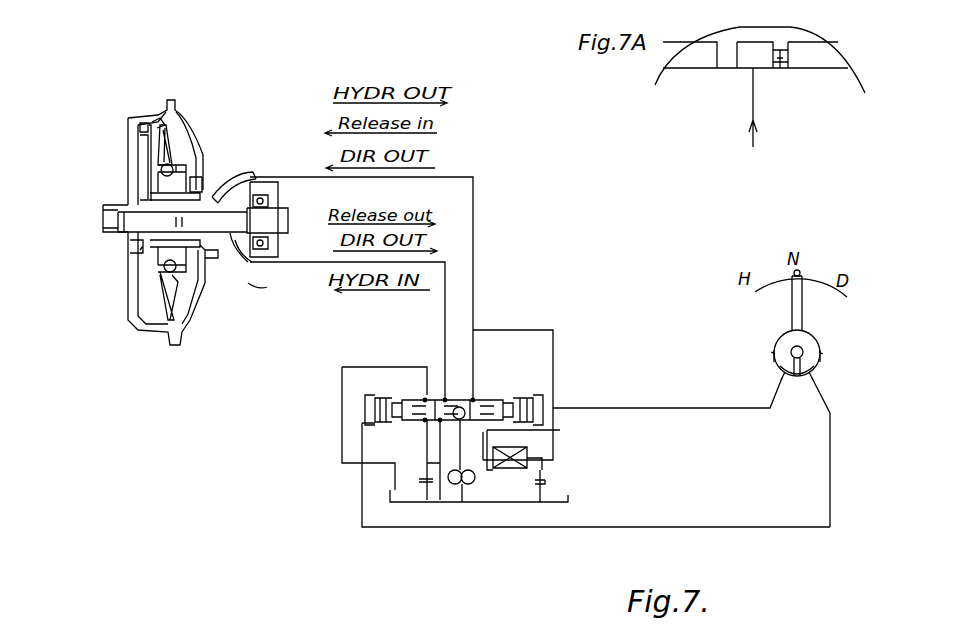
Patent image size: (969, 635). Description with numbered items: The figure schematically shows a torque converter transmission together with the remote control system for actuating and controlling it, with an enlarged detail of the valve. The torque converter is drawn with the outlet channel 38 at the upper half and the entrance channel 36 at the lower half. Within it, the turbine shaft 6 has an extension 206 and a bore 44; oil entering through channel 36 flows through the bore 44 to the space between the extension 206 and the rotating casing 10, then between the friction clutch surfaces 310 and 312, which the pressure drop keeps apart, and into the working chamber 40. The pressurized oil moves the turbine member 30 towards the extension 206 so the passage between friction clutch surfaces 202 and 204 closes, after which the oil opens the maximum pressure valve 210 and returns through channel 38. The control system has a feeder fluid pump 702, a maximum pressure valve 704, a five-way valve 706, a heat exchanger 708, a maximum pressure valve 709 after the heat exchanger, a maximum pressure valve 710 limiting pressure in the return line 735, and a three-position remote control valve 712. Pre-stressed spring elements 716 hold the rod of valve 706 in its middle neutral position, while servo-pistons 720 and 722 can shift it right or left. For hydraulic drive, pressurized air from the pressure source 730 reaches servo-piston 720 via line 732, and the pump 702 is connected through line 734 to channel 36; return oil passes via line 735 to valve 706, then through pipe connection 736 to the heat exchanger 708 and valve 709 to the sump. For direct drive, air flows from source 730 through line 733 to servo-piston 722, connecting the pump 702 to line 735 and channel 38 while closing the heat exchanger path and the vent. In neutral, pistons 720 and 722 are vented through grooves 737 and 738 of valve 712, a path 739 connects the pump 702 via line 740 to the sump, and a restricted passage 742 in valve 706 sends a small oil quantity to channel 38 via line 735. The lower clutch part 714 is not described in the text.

In FIG. 7, the turbine shaft 6 is at (278, 231).
In FIG. 7, the rotating casing 10 is at (135, 158).
In FIG. 7, the turbine member 30 is at (158, 152).
In FIG. 7, the channel 36 is at (259, 253).
In FIG. 7, the channel 38 is at (254, 173).
In FIG. 7, the working chamber 40 is at (194, 183).
In FIG. 7, the bore 44 is at (220, 258).
In FIG. 7, the friction clutch surface 202 is at (150, 123).
In FIG. 7, the friction clutch surface 204 is at (149, 120).
In FIG. 7, the extension of the turbine shaft 206 is at (132, 188).
In FIG. 7, the maximum pressure valve 210 is at (103, 206).
In FIG. 7, the friction clutch surface 310 is at (137, 126).
In FIG. 7, the friction clutch surface 312 is at (138, 122).
In FIG. 7, the feeder fluid pump 702 is at (470, 486).
In FIG. 7A, the feeder fluid pump 702 is at (734, 107).
In FIG. 7, the maximum pressure valve 704 is at (425, 487).
In FIG. 7, the 5-way valve 706 is at (433, 398).
In FIG. 7A, the 5-way valve 706 is at (777, 33).
In FIG. 7, the heat exchanger 708 is at (540, 448).
In FIG. 7, the maximum pressure valve 709 is at (542, 481).
In FIG. 7, the maximum pressure valve 710 is at (502, 330).
In FIG. 7, the remote control valve 712 is at (778, 345).
In FIG. 7, the lower clutch plate 714 is at (140, 250).
In FIG. 7, the pre-stressed spring elements 716 is at (407, 398).
In FIG. 7, the servo-piston 720 is at (378, 395).
In FIG. 7, the servo-piston 722 is at (538, 398).
In FIG. 7, the pressure source 730 is at (797, 378).
In FIG. 7, the line 732 is at (740, 527).
In FIG. 7, the line 733 is at (717, 410).
In FIG. 7, the line 734 is at (445, 297).
In FIG. 7, the line 735 is at (465, 175).
In FIG. 7, the pipe connection 736 is at (483, 437).
In FIG. 7, the groove 737 is at (822, 358).
In FIG. 7, the groove 738 is at (772, 355).
In FIG. 7, the path 739 is at (425, 441).
In FIG. 7, the line 740 is at (342, 428).
In FIG. 7A, the restricted passage 742 is at (780, 67).